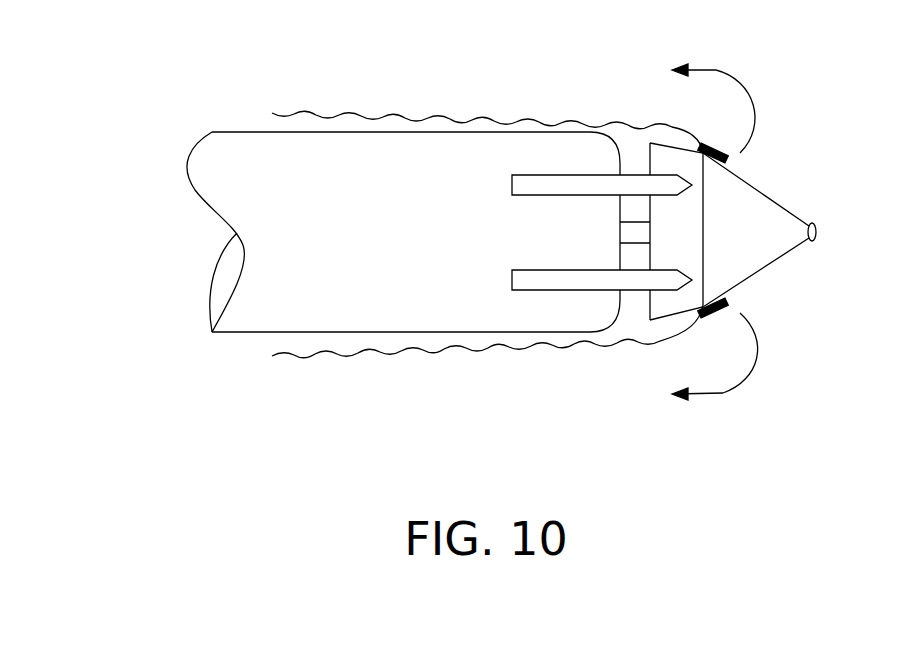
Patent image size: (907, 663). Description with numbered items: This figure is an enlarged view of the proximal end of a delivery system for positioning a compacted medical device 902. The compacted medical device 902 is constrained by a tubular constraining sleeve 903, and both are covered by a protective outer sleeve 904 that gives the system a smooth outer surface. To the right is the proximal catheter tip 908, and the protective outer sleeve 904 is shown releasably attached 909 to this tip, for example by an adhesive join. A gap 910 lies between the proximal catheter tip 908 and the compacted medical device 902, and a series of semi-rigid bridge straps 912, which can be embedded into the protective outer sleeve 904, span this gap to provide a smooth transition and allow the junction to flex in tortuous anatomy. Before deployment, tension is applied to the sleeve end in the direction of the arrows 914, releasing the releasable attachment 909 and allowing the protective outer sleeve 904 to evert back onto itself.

The compacted medical device 902 is at (235, 228).
The tubular constraining sleeve 903 is at (262, 132).
The protective outer sleeve 904 is at (413, 113).
The proximal catheter tip 908 is at (793, 205).
The releasable attachment 909 is at (730, 155).
The gap 910 is at (597, 350).
The semi-rigid bridge straps 912 is at (562, 185).
The direction arrows 914 is at (716, 70).